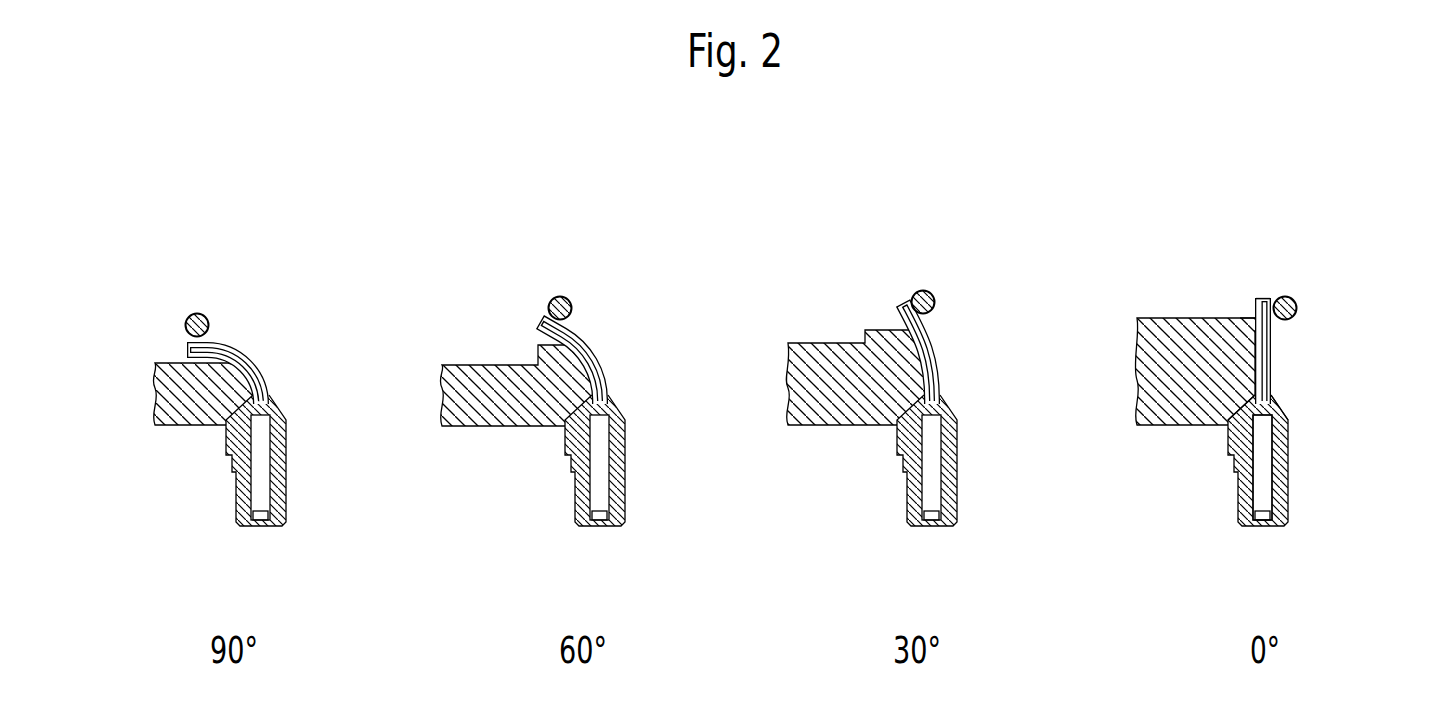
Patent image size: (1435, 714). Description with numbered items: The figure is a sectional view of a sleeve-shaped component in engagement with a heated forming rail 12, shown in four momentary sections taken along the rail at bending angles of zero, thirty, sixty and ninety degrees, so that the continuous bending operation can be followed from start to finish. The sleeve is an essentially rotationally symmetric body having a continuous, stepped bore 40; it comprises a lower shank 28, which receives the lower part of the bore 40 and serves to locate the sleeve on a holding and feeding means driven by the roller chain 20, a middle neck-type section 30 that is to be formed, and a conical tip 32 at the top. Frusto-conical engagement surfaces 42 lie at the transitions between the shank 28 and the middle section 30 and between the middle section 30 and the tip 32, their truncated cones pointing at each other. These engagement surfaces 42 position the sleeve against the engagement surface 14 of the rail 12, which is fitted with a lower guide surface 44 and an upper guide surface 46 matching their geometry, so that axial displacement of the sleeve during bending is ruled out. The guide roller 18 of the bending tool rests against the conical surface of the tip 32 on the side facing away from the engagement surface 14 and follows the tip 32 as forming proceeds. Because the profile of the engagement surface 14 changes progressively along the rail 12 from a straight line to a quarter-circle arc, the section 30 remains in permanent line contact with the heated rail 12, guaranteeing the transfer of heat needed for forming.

The forming rail 12 is at (192, 404).
The engagement surface 14 is at (234, 371).
The guide roller 18 is at (204, 318).
The roller chain 20 is at (1323, 329).
The lower shank 28 is at (290, 473).
The middle section 30 is at (247, 332).
The conical tip 32 is at (1252, 300).
The stepped bore 40 is at (1274, 441).
The frusto-conical engagement surfaces 42 is at (1292, 405).
The lower guide surface 44 is at (1238, 406).
The upper guide surface 46 is at (1244, 330).